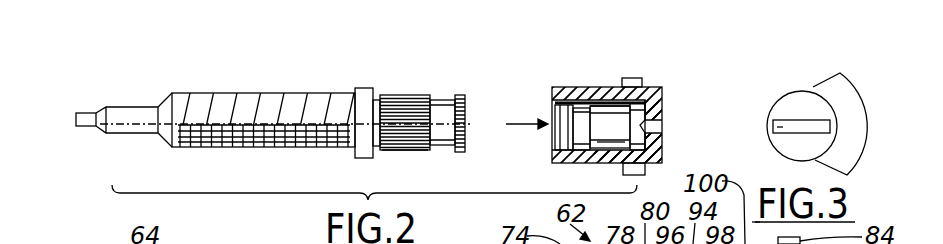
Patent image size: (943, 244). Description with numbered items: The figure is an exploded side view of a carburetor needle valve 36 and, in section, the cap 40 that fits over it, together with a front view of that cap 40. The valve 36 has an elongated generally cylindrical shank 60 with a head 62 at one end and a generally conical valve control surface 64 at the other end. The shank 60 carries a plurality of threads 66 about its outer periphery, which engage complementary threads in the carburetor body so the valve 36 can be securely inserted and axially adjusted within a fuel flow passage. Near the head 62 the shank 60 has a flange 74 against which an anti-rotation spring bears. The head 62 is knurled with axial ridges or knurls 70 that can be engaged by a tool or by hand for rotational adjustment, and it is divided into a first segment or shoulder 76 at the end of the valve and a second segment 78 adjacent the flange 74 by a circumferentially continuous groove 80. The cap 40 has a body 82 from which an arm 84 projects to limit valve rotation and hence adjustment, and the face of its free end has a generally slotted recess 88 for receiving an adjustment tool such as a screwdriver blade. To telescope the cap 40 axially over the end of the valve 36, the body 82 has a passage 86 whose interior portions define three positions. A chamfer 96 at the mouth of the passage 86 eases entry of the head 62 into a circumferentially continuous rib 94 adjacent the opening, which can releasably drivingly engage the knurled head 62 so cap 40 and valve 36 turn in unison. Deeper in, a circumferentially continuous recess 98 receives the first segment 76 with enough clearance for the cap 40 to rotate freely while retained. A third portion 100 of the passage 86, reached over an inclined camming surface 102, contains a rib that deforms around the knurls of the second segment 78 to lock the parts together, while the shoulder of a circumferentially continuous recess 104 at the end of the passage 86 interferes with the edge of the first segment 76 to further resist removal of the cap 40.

In FIG. 2, the needle valve 36 is at (195, 78).
In FIG. 2, the cap 40 is at (668, 58).
In FIG. 3, the cap 40 is at (780, 103).
In FIG. 2, the shank 60 is at (268, 100).
In FIG. 2, the head 62 is at (480, 70).
In FIG. 2, the valve control surface 64 is at (87, 95).
In FIG. 2, the threads 66 is at (233, 148).
In FIG. 2, the knurls 70 is at (458, 152).
In FIG. 2, the flange 74 is at (365, 88).
In FIG. 2, the first segment 76 is at (460, 95).
In FIG. 2, the second segment 78 is at (400, 95).
In FIG. 2, the groove 80 is at (440, 105).
In FIG. 2, the body 82 is at (605, 100).
In FIG. 2, the arm 84 is at (633, 78).
In FIG. 3, the arm 84 is at (842, 88).
In FIG. 2, the passage 86 is at (512, 125).
In FIG. 2, the slotted recess 88 is at (648, 126).
In FIG. 3, the slotted recess 88 is at (773, 130).
In FIG. 2, the rib 94 is at (553, 110).
In FIG. 2, the chamfer 96 is at (548, 140).
In FIG. 2, the recess 98 is at (565, 100).
In FIG. 2, the third portion 100 is at (613, 133).
In FIG. 2, the camming surface 102 is at (595, 102).
In FIG. 2, the recess 104 is at (665, 92).